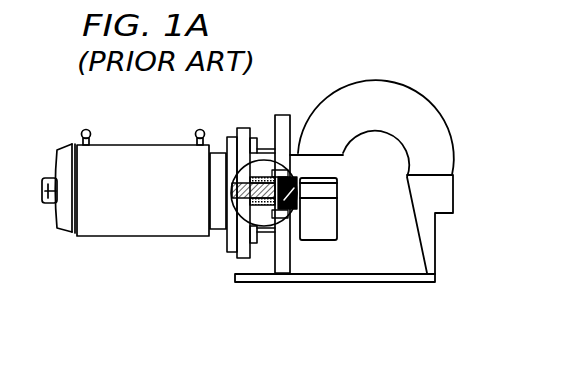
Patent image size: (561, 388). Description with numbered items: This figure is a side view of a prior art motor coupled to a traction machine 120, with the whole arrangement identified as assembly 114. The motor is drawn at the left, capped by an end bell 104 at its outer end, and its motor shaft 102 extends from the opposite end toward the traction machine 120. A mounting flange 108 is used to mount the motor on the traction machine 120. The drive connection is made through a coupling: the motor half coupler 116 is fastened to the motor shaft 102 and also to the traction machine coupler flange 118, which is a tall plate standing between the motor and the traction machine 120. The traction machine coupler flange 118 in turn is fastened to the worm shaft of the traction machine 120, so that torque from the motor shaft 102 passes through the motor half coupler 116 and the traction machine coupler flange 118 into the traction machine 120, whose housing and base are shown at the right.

The prior art motor and traction machine assembly 114 is at (286, 153).
The end bell 104 is at (66, 232).
The motor shaft 102 is at (247, 203).
The motor half coupler 116 is at (262, 176).
The mounting flange 108 is at (244, 128).
The traction machine coupler flange 118 is at (290, 157).
The traction machine 120 is at (440, 110).